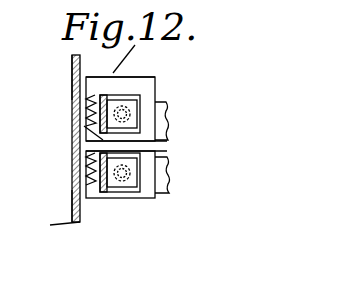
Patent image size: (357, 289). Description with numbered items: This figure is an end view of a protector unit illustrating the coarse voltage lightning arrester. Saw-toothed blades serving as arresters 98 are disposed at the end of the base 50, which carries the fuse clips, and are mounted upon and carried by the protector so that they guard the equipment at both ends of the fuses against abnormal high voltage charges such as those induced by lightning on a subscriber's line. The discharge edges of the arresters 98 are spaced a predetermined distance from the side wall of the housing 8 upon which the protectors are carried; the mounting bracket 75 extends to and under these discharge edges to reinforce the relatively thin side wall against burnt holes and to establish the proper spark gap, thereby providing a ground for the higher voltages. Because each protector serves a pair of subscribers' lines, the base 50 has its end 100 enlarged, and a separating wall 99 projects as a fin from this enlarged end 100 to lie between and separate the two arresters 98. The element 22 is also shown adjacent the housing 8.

The housing 8 is at (70, 80).
The plate 22 is at (72, 67).
The base 50 is at (145, 110).
The mounting bracket 75 is at (72, 208).
The arrester 98 is at (100, 108).
The separating wall 99 is at (168, 147).
The enlarged end 100 is at (138, 88).